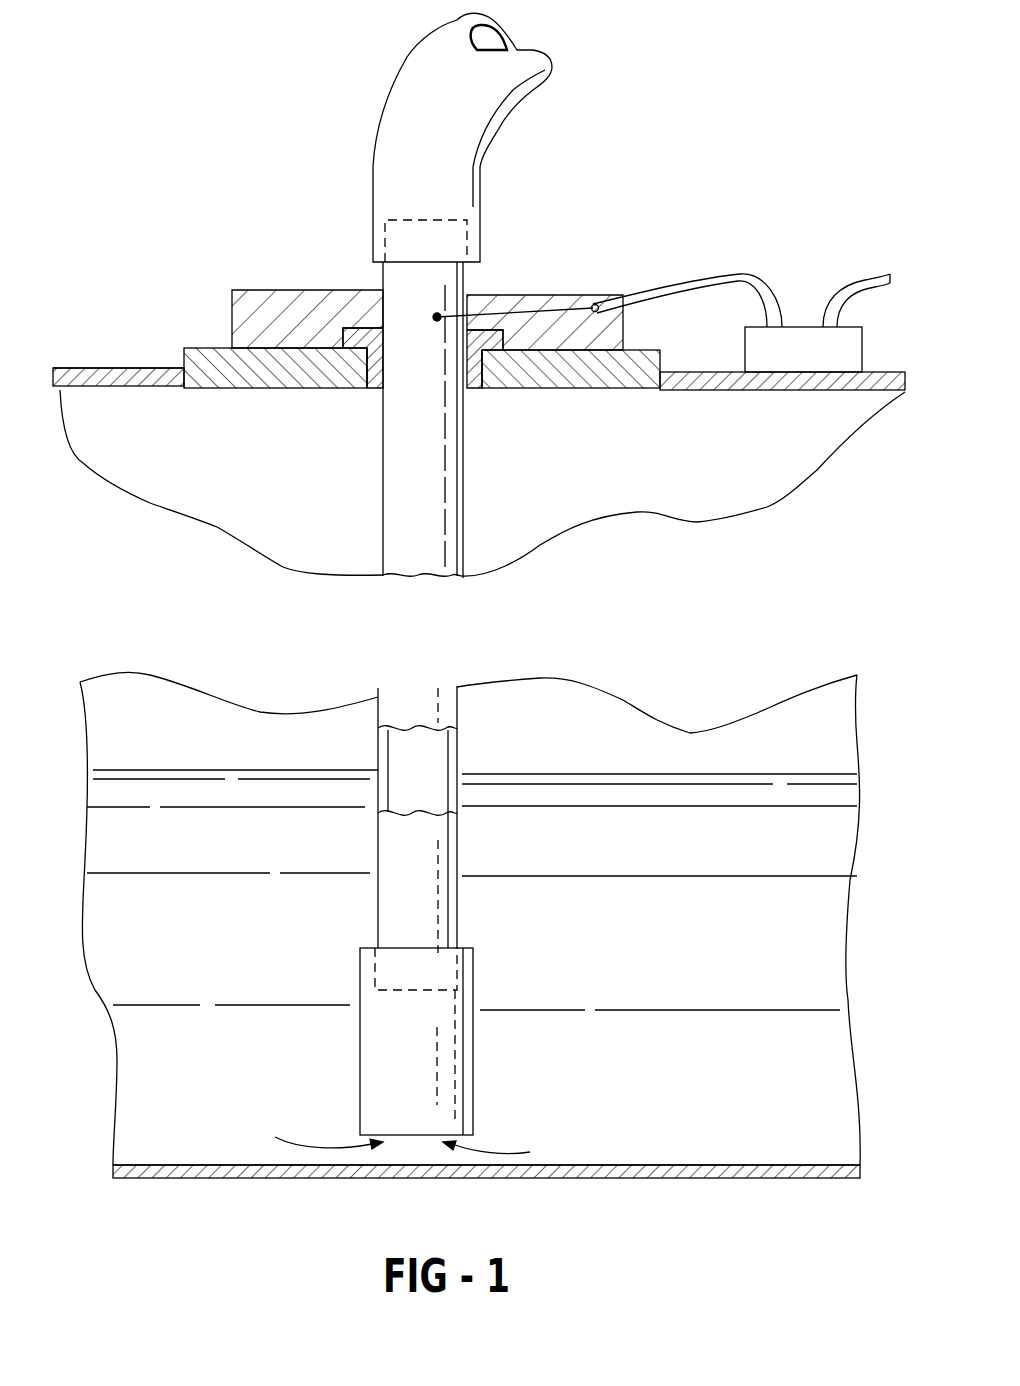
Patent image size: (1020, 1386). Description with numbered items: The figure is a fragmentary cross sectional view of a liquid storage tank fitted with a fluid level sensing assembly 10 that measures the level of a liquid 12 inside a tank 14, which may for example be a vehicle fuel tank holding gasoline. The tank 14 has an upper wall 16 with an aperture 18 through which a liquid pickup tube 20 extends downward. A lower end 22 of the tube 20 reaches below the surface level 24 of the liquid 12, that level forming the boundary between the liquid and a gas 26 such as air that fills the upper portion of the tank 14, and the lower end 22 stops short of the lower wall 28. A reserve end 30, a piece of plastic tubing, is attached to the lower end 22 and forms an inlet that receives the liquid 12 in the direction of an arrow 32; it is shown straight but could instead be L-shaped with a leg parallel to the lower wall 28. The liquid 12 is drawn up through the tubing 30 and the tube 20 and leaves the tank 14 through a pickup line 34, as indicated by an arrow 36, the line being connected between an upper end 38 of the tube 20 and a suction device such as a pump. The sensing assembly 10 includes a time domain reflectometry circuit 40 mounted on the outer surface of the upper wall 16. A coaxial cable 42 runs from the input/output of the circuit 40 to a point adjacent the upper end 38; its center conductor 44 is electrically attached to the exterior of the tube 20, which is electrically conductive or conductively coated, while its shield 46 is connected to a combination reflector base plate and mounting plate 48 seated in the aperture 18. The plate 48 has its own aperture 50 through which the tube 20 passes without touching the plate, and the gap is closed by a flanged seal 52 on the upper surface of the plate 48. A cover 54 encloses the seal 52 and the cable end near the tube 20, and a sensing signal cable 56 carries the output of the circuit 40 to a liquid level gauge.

The fluid level sensing assembly 10 is at (738, 130).
The liquid 12 is at (727, 1075).
The tank 14 is at (103, 355).
The upper wall 16 is at (160, 367).
The aperture 18 is at (190, 388).
The liquid pickup tube 20 is at (383, 520).
The lower end 22 is at (462, 972).
The surface level 24 is at (258, 770).
The gas 26 is at (650, 487).
The lower wall 28 is at (683, 1178).
The reserve end 30 is at (360, 1060).
The arrow 32 is at (317, 1152).
The pickup line 34 is at (400, 102).
The arrow 36 is at (531, 33).
The upper end 38 is at (467, 237).
The time domain reflectometry circuit 40 is at (750, 352).
The coaxial cable 42 is at (700, 280).
The center conductor 44 is at (537, 347).
The shield 46 is at (548, 392).
The combination reflector base plate and mounting plate 48 is at (533, 390).
The aperture 50 is at (373, 388).
The flanged seal 52 is at (365, 330).
The cover 54 is at (237, 300).
The sensing signal cable 56 is at (848, 282).